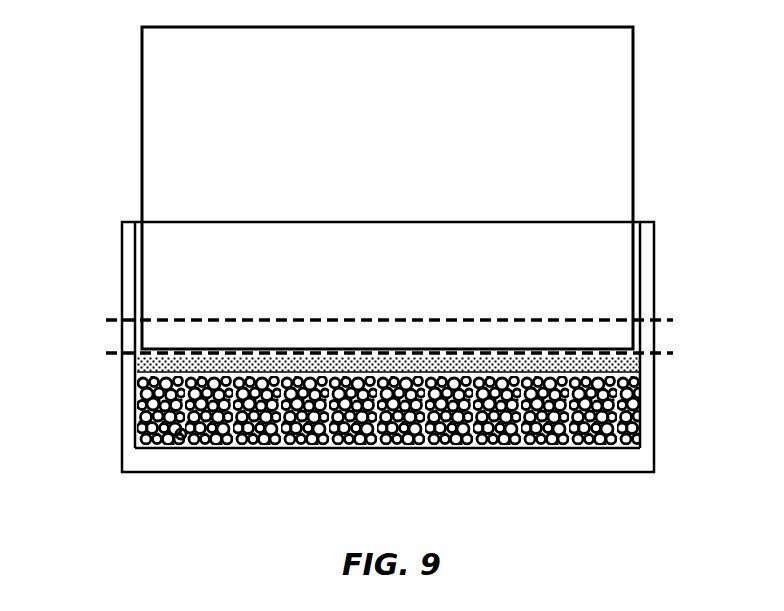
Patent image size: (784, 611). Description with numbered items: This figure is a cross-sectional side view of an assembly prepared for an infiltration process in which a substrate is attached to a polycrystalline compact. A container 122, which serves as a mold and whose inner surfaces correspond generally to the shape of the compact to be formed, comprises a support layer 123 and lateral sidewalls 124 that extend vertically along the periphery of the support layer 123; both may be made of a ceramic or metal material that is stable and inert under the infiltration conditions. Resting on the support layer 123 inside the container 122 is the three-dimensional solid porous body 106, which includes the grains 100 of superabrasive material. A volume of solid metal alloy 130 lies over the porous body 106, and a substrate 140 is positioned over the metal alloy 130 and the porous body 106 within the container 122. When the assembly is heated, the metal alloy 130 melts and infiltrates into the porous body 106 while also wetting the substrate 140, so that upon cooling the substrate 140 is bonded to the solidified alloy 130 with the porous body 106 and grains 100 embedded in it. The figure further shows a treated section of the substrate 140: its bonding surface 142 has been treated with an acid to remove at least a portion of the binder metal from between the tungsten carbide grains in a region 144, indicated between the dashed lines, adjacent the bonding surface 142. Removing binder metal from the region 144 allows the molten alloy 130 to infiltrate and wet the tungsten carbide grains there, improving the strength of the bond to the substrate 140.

The grains of superabrasive material 100 is at (181, 440).
The three-dimensional solid porous body 106 is at (172, 366).
The container 122 is at (91, 198).
The support layer 123 is at (265, 460).
The lateral sidewalls 124 is at (128, 246).
The solid metal alloy 130 is at (620, 410).
The substrate 140 is at (168, 78).
The bonding surface 142 is at (595, 357).
The region 144 is at (573, 332).